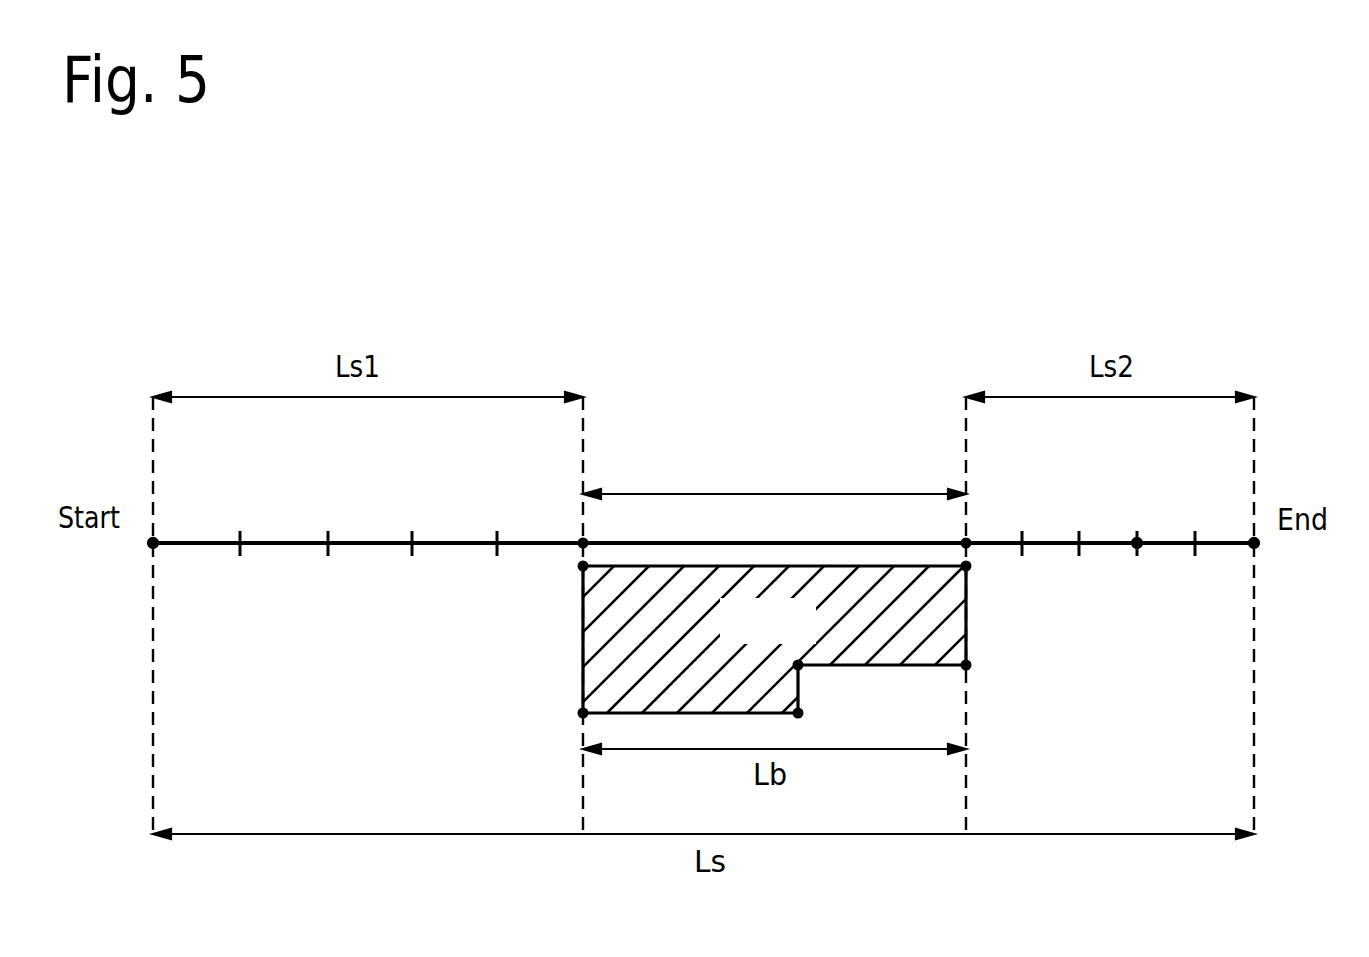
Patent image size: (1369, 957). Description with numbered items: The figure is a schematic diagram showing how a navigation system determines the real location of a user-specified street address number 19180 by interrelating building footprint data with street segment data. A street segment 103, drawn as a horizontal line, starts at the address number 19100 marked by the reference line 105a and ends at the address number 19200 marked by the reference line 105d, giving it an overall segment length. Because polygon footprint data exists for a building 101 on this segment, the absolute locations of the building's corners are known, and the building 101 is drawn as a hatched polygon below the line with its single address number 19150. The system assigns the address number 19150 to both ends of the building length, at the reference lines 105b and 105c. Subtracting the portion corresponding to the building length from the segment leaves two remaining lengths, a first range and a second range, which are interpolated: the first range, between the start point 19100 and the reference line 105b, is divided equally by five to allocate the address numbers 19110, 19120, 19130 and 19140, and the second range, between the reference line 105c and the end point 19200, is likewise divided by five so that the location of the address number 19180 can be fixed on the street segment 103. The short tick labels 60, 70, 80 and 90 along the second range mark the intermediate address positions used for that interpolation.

The building 101 is at (600, 670).
The street segment 103 is at (355, 545).
The reference line 105a is at (153, 472).
The reference line 105b is at (583, 470).
The reference line 105c is at (966, 462).
The reference line 105d is at (1254, 467).
The address number 19100 is at (107, 563).
The address number 19110 is at (240, 528).
The address number 19120 is at (328, 528).
The address number 19130 is at (412, 528).
The address number 19140 is at (497, 560).
The address number 19150 is at (997, 487).
The street address number 19180 is at (1137, 545).
The address number 19200 is at (1300, 563).
The tick label 60 is at (1022, 532).
The tick label 70 is at (1079, 532).
The tick label 80 is at (1137, 532).
The tick label 90 is at (1195, 532).